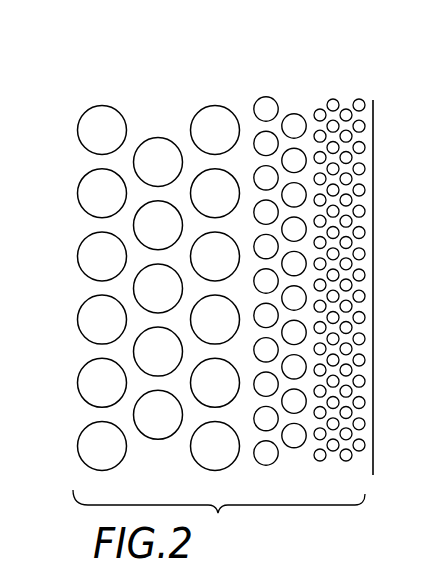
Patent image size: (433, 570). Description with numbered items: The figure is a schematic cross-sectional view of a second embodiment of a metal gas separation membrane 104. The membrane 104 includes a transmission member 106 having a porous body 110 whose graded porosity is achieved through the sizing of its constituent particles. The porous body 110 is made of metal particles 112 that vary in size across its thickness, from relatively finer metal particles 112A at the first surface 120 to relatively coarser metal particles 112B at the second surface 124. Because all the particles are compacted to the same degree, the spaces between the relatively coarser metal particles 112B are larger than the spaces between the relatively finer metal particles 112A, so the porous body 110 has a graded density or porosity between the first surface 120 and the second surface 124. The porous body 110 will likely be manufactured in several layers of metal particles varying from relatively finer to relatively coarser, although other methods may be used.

The metal gas separation membrane 104 is at (143, 100).
The transmission member 106 is at (240, 105).
The porous body 110 is at (168, 128).
The metal particles 112 is at (218, 513).
The relatively finer metal particles 112A is at (363, 98).
The relatively coarser metal particles 112B is at (88, 103).
The first surface 120 is at (363, 413).
The second surface 124 is at (83, 352).